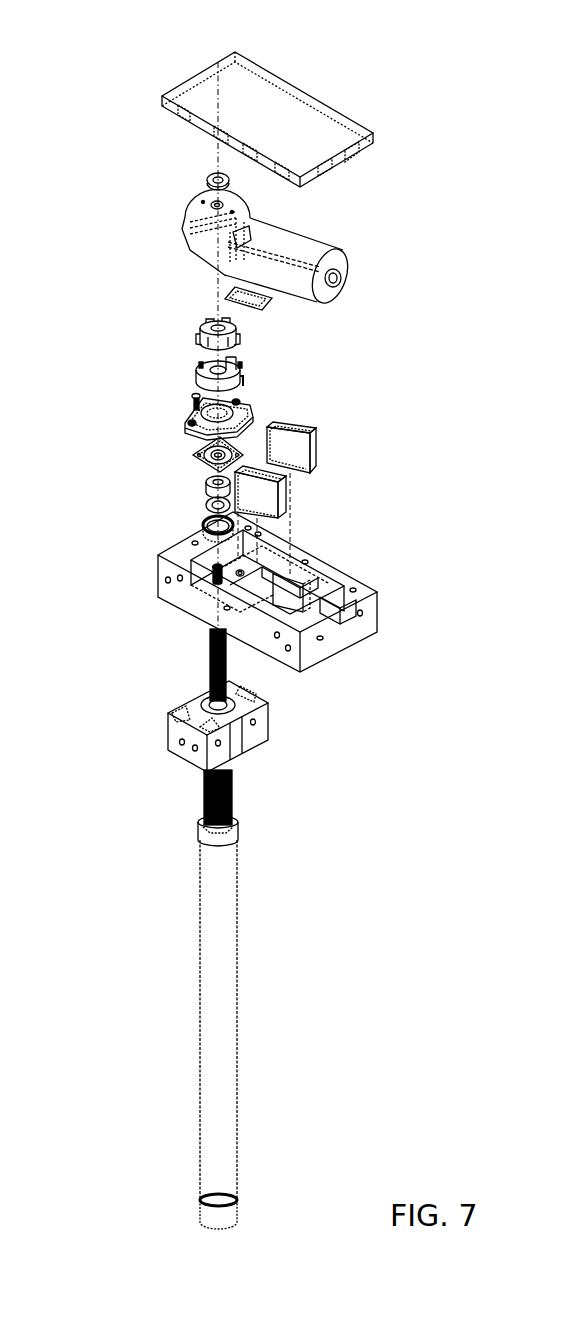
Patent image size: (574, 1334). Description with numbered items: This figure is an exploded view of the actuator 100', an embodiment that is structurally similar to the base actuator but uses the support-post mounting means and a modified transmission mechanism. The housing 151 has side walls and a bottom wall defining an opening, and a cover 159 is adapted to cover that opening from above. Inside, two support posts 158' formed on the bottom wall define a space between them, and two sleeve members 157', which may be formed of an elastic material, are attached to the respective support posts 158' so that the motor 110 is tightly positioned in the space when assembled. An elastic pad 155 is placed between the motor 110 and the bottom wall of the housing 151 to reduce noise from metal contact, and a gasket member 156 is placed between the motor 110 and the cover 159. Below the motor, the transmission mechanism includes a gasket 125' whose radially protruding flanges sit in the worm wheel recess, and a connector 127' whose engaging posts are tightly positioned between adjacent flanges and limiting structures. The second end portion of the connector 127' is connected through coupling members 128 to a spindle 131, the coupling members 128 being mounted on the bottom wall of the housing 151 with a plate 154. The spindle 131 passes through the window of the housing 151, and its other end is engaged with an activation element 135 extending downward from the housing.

The actuator 100' is at (247, 315).
The cover 159 is at (308, 123).
The gasket member 156 is at (207, 178).
The motor 110 is at (310, 252).
The elastic pad 155 is at (237, 295).
The connector 127' is at (161, 363).
The gasket 125' is at (291, 343).
The plate 154 is at (187, 418).
The sleeve member 157' is at (333, 494).
The coupling members 128 is at (161, 489).
The spindle 131 is at (215, 573).
The support post 158' is at (353, 583).
The housing 151 is at (320, 645).
The activation element 135 is at (213, 898).